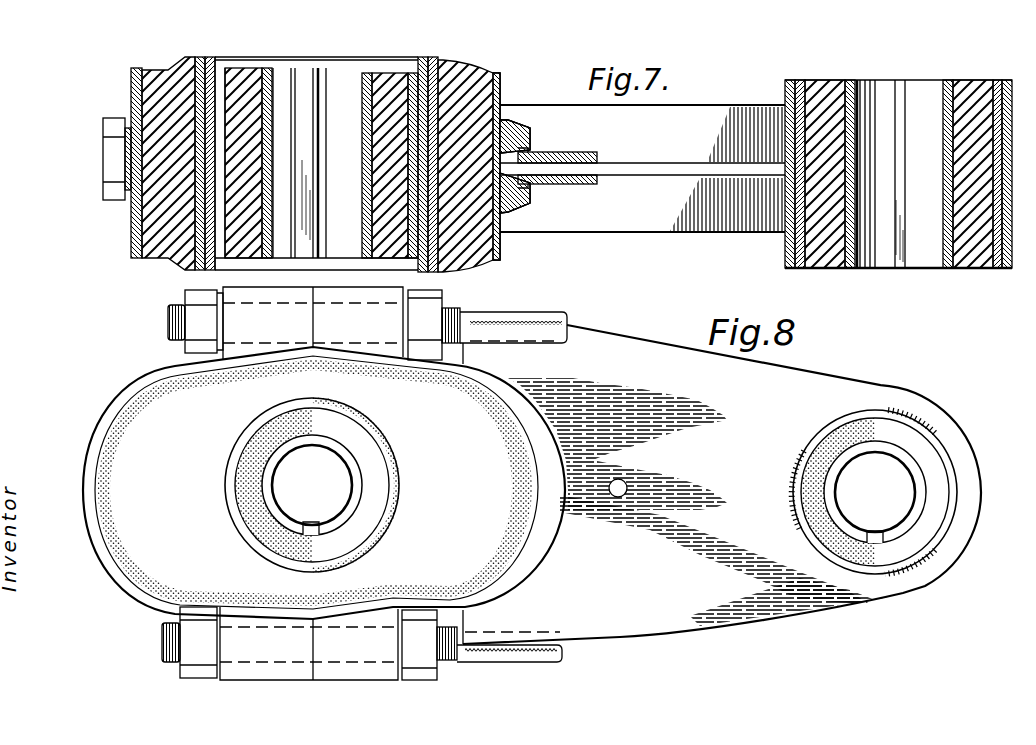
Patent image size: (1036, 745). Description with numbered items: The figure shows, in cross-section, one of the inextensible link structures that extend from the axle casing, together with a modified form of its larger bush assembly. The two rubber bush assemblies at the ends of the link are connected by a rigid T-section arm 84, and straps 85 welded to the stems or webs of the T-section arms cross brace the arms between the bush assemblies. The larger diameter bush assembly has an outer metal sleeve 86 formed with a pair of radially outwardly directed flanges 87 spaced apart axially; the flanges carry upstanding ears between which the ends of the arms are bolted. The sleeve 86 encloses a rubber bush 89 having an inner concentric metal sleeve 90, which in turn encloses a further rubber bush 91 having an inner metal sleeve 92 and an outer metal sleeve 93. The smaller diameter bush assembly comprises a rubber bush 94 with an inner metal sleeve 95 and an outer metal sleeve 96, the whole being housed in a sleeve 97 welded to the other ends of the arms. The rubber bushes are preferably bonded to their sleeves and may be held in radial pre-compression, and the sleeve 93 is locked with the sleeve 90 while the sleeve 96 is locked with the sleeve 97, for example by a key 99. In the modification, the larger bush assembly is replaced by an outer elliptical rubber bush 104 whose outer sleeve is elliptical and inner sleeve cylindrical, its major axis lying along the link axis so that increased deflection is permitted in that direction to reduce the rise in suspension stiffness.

In FIG. 7, the T-section arm 84 is at (657, 168).
In FIG. 7, the strap 85 is at (563, 152).
In FIG. 7, the outer metal sleeve 86 is at (132, 76).
In FIG. 7, the flange 87 is at (103, 185).
In FIG. 7, the rubber bush 89 is at (467, 90).
In FIG. 7, the inner concentric metal sleeve 90 is at (205, 203).
In FIG. 7, the further rubber bush 91 is at (383, 143).
In FIG. 7, the inner metal sleeve 92 is at (363, 108).
In FIG. 7, the outer metal sleeve 93 is at (218, 222).
In FIG. 7, the rubber bush 94 is at (823, 105).
In FIG. 7, the inner metal sleeve 95 is at (952, 68).
In FIG. 7, the outer metal sleeve 96 is at (797, 87).
In FIG. 7, the sleeve 97 is at (783, 80).
In FIG. 7, the key 99 is at (900, 248).
In FIG. 8, the outer elliptical rubber bush 104 is at (145, 420).